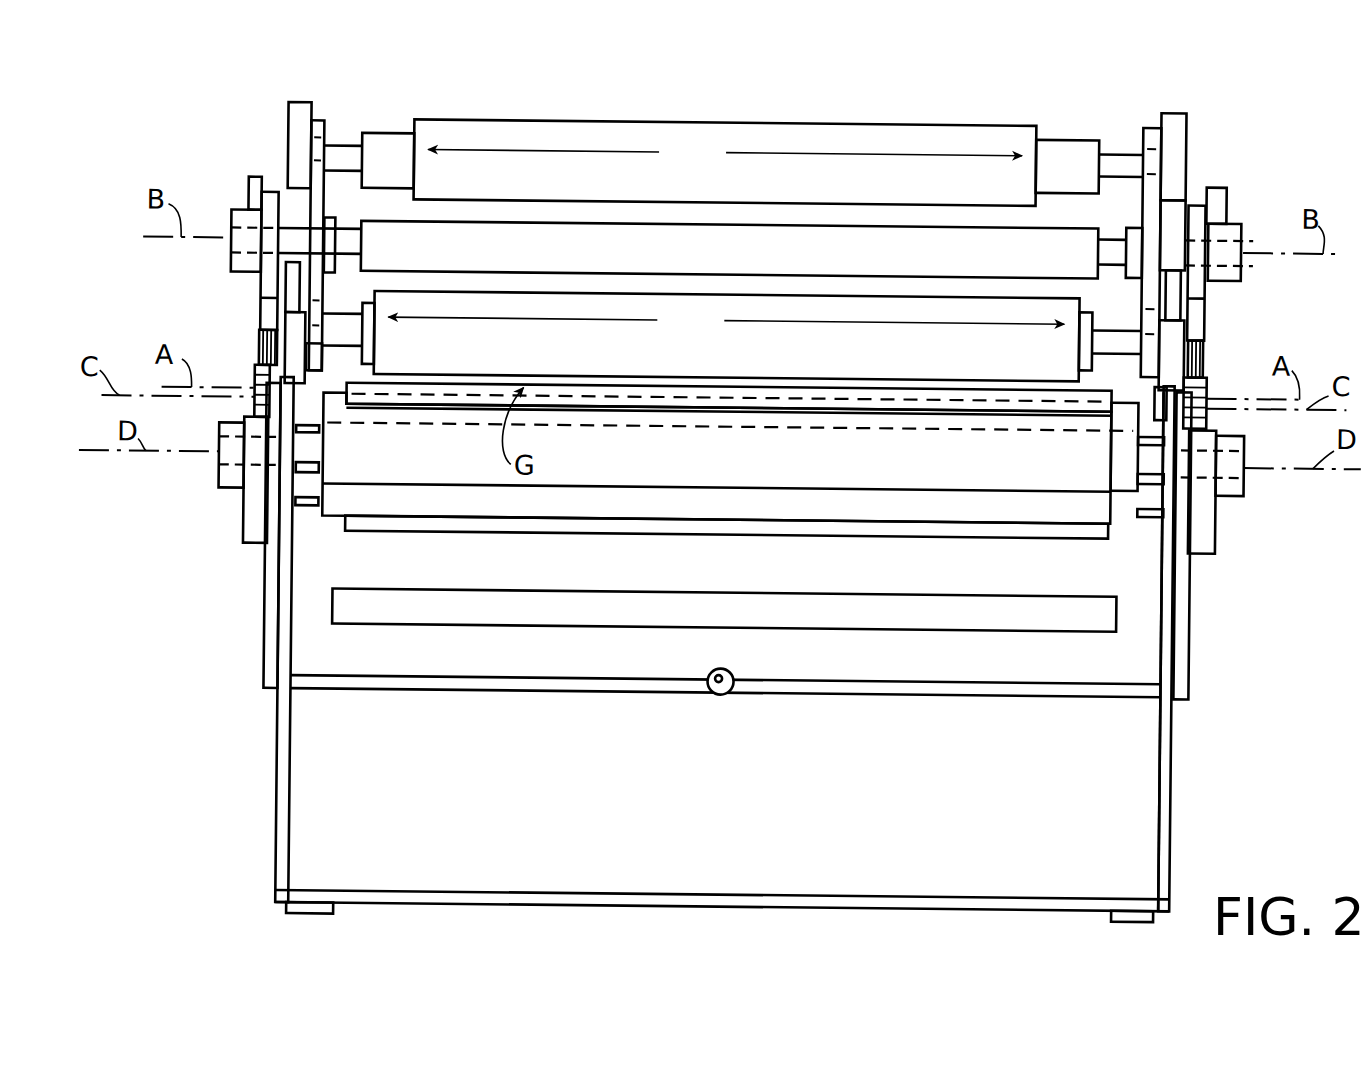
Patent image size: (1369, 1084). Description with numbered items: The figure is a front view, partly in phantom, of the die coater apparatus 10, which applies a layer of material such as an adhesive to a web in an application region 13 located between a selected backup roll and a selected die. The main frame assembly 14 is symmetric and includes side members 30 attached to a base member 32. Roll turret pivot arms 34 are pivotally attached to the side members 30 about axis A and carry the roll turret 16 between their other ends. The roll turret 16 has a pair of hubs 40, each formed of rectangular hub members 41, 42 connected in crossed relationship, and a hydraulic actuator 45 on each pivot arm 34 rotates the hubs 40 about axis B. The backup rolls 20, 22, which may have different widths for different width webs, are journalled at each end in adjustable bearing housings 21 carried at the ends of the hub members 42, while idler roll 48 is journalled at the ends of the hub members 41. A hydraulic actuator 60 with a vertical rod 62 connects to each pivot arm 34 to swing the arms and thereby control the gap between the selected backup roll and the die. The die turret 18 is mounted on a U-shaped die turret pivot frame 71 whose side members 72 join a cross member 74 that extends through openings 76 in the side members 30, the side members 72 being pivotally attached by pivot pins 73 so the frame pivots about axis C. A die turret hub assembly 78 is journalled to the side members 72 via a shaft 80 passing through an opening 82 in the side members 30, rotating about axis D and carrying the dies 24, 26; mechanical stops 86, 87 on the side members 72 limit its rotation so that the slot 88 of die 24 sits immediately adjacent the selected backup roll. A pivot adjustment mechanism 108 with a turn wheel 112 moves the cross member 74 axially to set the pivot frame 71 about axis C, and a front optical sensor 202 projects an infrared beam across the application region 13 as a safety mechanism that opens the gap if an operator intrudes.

The die coater apparatus 10 is at (158, 748).
The application region 13 is at (1050, 387).
The main frame assembly 14 is at (1200, 773).
The roll turret 16 is at (1222, 148).
The die turret 18 is at (1135, 535).
The backup roll 20 is at (912, 130).
The adjustable bearing housing 21 is at (290, 128).
The backup roll 22 is at (1040, 302).
The die 24 is at (432, 462).
The die 26 is at (835, 460).
The side member 30 is at (279, 775).
The base member 32 is at (703, 890).
The roll turret pivot arm 34 is at (258, 285).
The hub 40 is at (312, 116).
The hub member 41 is at (326, 272).
The hub member 42 is at (1147, 118).
The hydraulic actuator 45 is at (248, 195).
The idler roll 48 is at (378, 235).
The hydraulic actuator 60 is at (250, 404).
The rod 62 is at (1196, 352).
The die turret pivot frame 71 is at (1197, 663).
The side member 72 is at (265, 585).
The pivot pin 73 is at (1180, 382).
The cross member 74 is at (831, 687).
The opening 76 is at (271, 710).
The die turret hub assembly 78 is at (330, 472).
The shaft 80 is at (1150, 470).
The opening 82 is at (1230, 527).
The mechanical stop 86 is at (320, 476).
The mechanical stop 87 is at (306, 507).
The slot 88 is at (571, 380).
The pivot adjustment mechanism 108 is at (707, 700).
The turn wheel 112 is at (735, 668).
The front optical sensor 202 is at (310, 386).